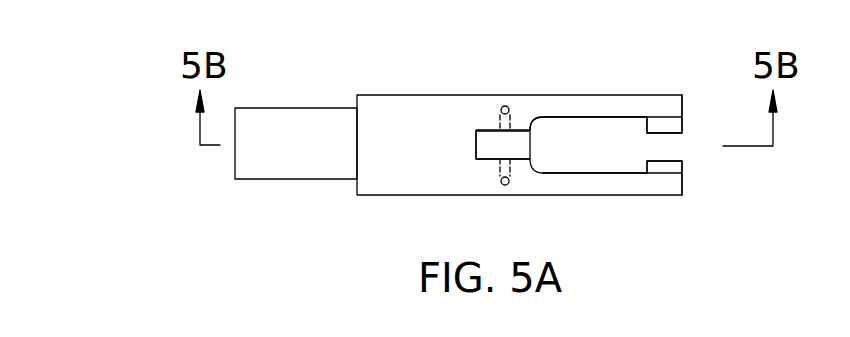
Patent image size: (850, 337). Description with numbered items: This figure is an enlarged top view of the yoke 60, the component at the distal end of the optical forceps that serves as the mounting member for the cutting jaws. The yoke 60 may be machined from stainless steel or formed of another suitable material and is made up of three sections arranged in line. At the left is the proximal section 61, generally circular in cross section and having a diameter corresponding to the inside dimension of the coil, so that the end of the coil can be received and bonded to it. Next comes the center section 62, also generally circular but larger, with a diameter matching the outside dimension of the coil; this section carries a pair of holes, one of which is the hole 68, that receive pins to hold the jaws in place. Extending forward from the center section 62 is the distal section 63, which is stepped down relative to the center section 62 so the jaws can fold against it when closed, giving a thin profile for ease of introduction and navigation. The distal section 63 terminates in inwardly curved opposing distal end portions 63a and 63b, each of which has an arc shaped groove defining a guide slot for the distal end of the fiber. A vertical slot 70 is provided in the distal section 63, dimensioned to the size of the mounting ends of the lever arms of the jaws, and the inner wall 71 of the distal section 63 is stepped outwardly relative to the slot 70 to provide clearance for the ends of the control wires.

The yoke 60 is at (447, 68).
The proximal section 61 is at (306, 108).
The center section 62 is at (389, 104).
The distal section 63 is at (629, 95).
The distal end portion 63a is at (679, 122).
The distal end portion 63b is at (675, 164).
The hole 68 is at (505, 105).
The vertical slot 70 is at (525, 151).
The inner wall 71 is at (572, 118).